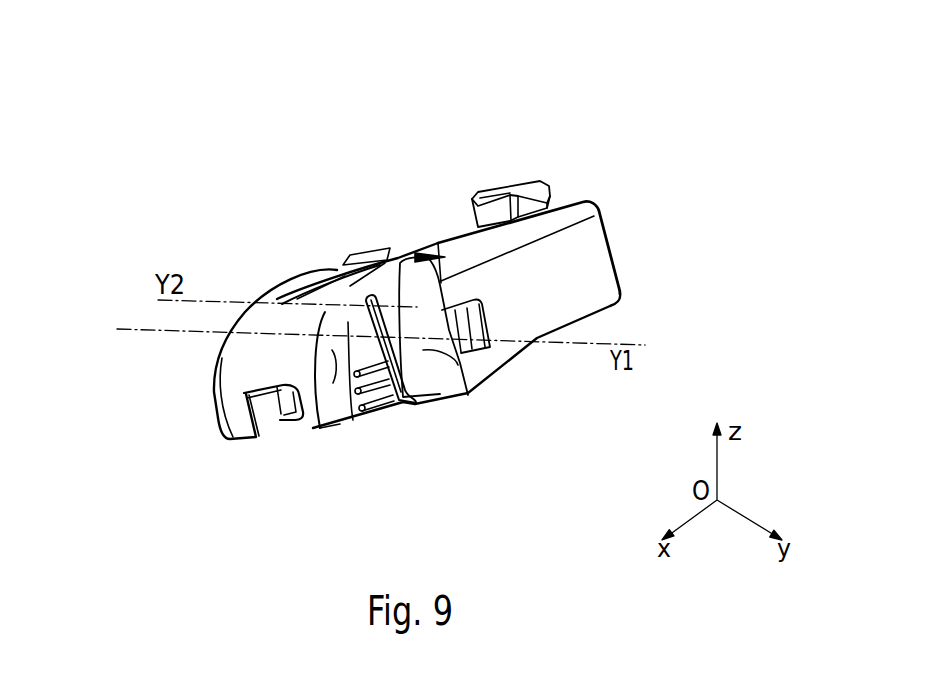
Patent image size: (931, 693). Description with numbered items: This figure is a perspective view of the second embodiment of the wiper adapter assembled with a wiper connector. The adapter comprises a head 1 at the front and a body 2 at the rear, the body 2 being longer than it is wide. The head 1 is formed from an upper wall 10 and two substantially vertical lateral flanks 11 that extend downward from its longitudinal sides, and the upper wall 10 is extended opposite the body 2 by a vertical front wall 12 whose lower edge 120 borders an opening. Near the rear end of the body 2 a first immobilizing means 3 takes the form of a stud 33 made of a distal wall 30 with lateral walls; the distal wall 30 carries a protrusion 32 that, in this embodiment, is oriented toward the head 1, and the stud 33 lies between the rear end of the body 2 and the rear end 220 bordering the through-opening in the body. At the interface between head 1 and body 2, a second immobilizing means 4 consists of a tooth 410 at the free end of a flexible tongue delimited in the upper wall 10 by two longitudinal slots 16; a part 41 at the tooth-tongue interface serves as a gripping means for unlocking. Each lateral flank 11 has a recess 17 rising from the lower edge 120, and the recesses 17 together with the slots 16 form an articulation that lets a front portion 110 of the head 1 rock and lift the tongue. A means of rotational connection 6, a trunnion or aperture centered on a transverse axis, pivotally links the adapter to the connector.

The head 1 is at (180, 397).
The body 2 is at (620, 310).
The first immobilizing means 3 is at (535, 158).
The second immobilizing means 4 is at (367, 230).
The means of rotational connection 6 is at (494, 373).
The upper wall 10 is at (275, 300).
The lateral flank 11 is at (468, 395).
The front wall 12 is at (233, 408).
The longitudinal slot 16 is at (283, 296).
The recess 17 is at (422, 408).
The distal wall 30 is at (507, 187).
The protrusion 32 is at (472, 208).
The stud 33 is at (566, 190).
The gripping part 41 is at (345, 277).
The front portion of the head 110 is at (314, 424).
The lower edge 120 is at (380, 412).
The rear end 220 is at (437, 242).
The tooth 410 is at (390, 252).